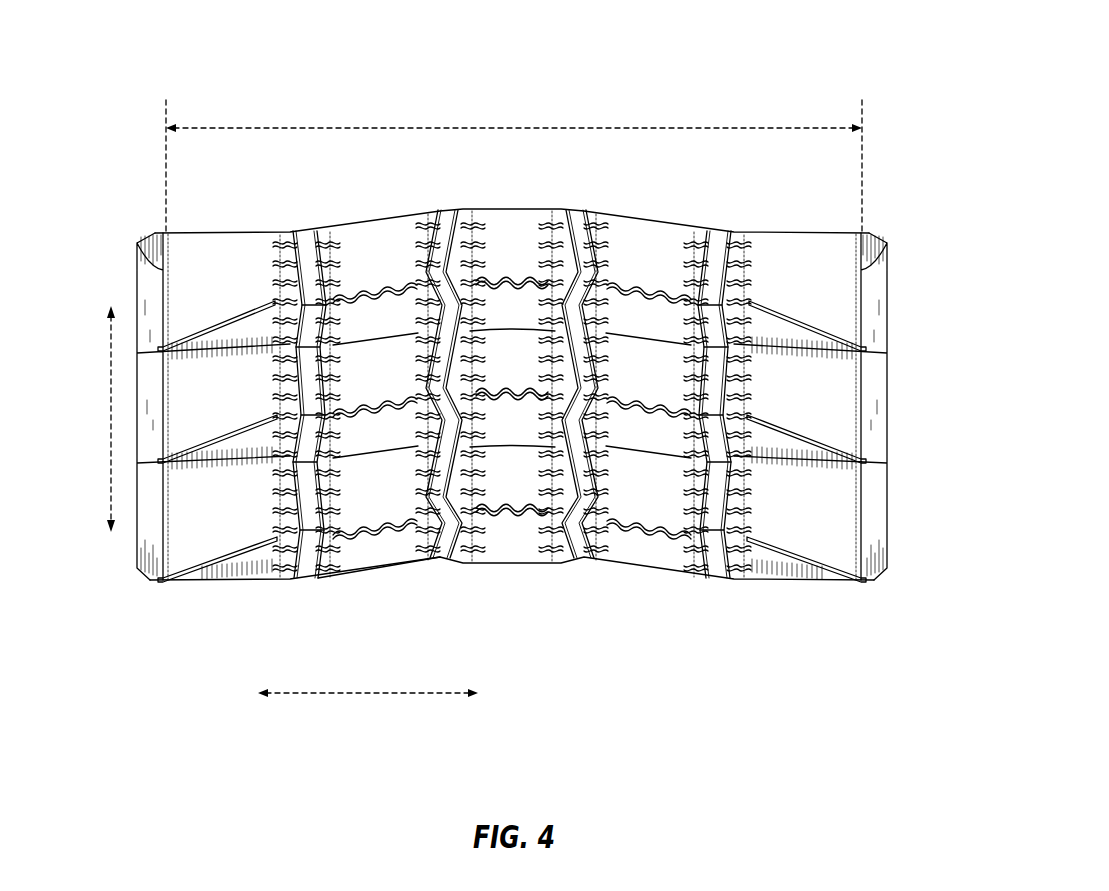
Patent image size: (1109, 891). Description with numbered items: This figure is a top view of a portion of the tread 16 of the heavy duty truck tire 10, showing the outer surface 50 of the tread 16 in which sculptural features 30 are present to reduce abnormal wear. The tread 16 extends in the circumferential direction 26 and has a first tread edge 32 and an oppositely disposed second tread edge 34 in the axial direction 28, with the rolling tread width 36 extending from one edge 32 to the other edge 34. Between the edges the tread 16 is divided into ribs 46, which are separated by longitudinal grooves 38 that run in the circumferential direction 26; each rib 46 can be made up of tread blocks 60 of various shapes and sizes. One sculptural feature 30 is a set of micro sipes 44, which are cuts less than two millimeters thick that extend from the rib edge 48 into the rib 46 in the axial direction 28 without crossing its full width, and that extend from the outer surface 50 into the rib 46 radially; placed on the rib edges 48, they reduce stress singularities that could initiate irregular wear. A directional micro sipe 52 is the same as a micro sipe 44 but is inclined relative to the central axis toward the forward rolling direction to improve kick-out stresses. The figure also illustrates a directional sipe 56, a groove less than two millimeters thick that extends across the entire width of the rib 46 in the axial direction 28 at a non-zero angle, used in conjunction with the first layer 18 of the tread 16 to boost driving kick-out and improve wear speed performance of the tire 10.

The tire 10 is at (884, 100).
The tread 16 is at (654, 238).
The first layer 18 is at (648, 547).
The circumferential direction 26 is at (111, 417).
The axial direction 28 is at (368, 692).
The sculptural feature 30 is at (333, 240).
The first tread edge 32 is at (162, 269).
The second tread edge 34 is at (863, 269).
The rolling tread width 36 is at (515, 127).
The longitudinal groove 38 is at (305, 232).
The micro sipe 44 is at (322, 553).
The rib 46 is at (377, 553).
The rib edge 48 is at (302, 563).
The outer surface 50 is at (505, 226).
The directional micro sipe 52 is at (334, 283).
The directional sipe 56 is at (650, 546).
The tread block 60 is at (545, 219).